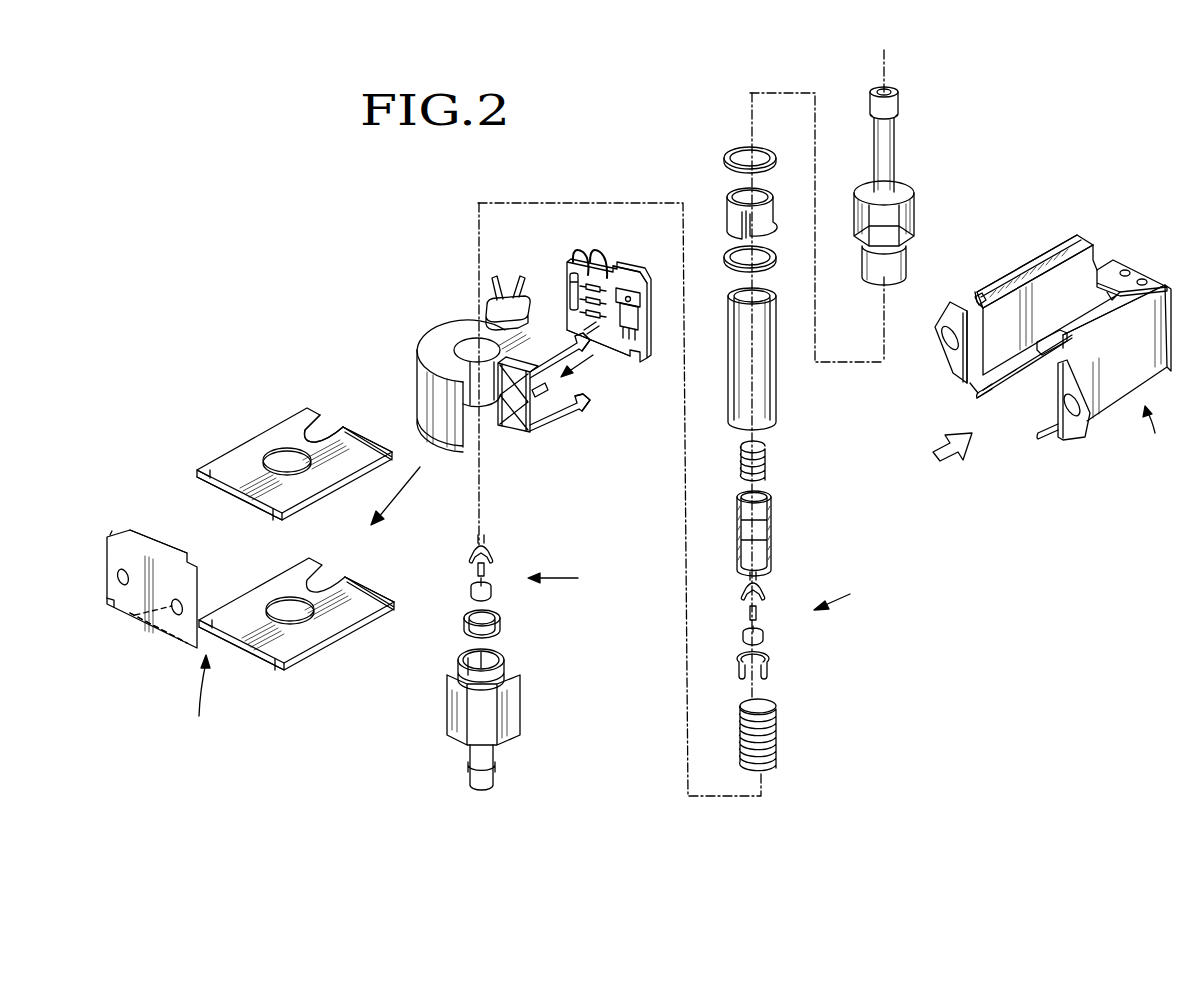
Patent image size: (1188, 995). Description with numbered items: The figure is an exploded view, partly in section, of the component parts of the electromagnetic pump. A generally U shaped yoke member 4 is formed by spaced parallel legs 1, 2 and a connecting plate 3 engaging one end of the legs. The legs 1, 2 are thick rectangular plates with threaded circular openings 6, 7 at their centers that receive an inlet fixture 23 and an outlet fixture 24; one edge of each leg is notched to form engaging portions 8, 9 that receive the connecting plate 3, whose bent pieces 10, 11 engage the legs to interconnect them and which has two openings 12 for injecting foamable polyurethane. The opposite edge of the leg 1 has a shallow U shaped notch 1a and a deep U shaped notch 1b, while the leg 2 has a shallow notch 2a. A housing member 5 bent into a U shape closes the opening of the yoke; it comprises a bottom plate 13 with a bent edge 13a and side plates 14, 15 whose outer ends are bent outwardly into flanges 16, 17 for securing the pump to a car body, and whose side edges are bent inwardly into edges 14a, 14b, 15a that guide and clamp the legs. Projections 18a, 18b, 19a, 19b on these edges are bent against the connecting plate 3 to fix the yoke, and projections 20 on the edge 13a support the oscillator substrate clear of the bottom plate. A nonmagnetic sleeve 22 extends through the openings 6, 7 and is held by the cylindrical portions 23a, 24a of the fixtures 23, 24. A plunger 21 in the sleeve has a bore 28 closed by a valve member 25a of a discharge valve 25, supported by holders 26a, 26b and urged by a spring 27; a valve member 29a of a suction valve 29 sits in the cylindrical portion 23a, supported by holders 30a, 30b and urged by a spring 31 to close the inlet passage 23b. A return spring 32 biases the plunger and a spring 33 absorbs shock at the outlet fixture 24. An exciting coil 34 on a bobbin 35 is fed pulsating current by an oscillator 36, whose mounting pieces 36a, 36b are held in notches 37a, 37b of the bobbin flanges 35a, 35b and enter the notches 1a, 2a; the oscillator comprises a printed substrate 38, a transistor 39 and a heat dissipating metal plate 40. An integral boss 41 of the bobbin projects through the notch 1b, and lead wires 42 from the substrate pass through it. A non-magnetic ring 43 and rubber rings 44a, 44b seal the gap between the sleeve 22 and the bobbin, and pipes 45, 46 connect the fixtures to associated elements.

The leg 1 is at (236, 455).
The shallow U shaped notch 1a is at (357, 445).
The deep U shaped notch 1b is at (327, 432).
The leg 2 is at (296, 626).
The shallow U shaped notch 2a is at (345, 600).
The connecting plate 3 is at (142, 606).
The yoke member 4 is at (191, 736).
The housing member 5 is at (1149, 455).
The circular opening 6 is at (281, 462).
The circular opening 7 is at (282, 615).
The engaging portion 8 is at (242, 496).
The engaging portion 9 is at (256, 652).
The bent piece 10 is at (160, 556).
The bent piece 11 is at (165, 643).
The openings 12 is at (123, 572).
The bottom plate 13 is at (1093, 257).
The bent edge 13a is at (1118, 268).
The side plate 14 is at (1047, 280).
The bent edge 14a is at (1015, 278).
The bent edge 14b is at (1008, 377).
The side plate 15 is at (1117, 397).
The bent edge 15a is at (1112, 312).
The flange 16 is at (957, 367).
The flange 17 is at (1075, 440).
The projection 18a is at (975, 300).
The projection 18b is at (981, 402).
The projection 19a is at (1040, 354).
The projection 19b is at (1040, 441).
The projections 20 is at (1130, 271).
The plunger 21 is at (776, 512).
The nonmagnetic sleeve 22 is at (776, 350).
The inlet fixture 23 is at (518, 702).
The cylindrical portion 23a is at (520, 675).
The inlet passage 23b is at (492, 658).
The outlet fixture 24 is at (916, 207).
The cylindrical portion 24a is at (908, 245).
The discharge valve 25 is at (852, 596).
The valve member 25a is at (766, 637).
The holder 26a is at (762, 590).
The holder 26b is at (768, 665).
The spring 27 is at (758, 610).
The bore 28 is at (768, 537).
The suction valve 29 is at (580, 586).
The valve member 29a is at (494, 595).
The holder 30a is at (490, 547).
The holder 30b is at (502, 622).
The spring 31 is at (490, 567).
The return spring 32 is at (778, 730).
The spring 33 is at (768, 462).
The exciting coil 34 is at (508, 434).
The bobbin 35 is at (440, 345).
The flange 35a is at (578, 410).
The flange 35b is at (551, 430).
The oscillator 36 is at (627, 286).
The mounting piece 36a is at (636, 278).
The mounting piece 36b is at (624, 352).
The notch 37a is at (548, 340).
The notch 37b is at (556, 400).
The printed substrate 38 is at (568, 280).
The transistor 39 is at (640, 325).
The heat dissipating metal plate 40 is at (641, 305).
The boss 41 is at (500, 310).
The lead wires 42 is at (505, 292).
The non-magnetic ring 43 is at (766, 196).
The rubber ring 44a is at (776, 150).
The rubber ring 44b is at (776, 252).
The pipe 45 is at (496, 768).
The pipe 46 is at (896, 129).